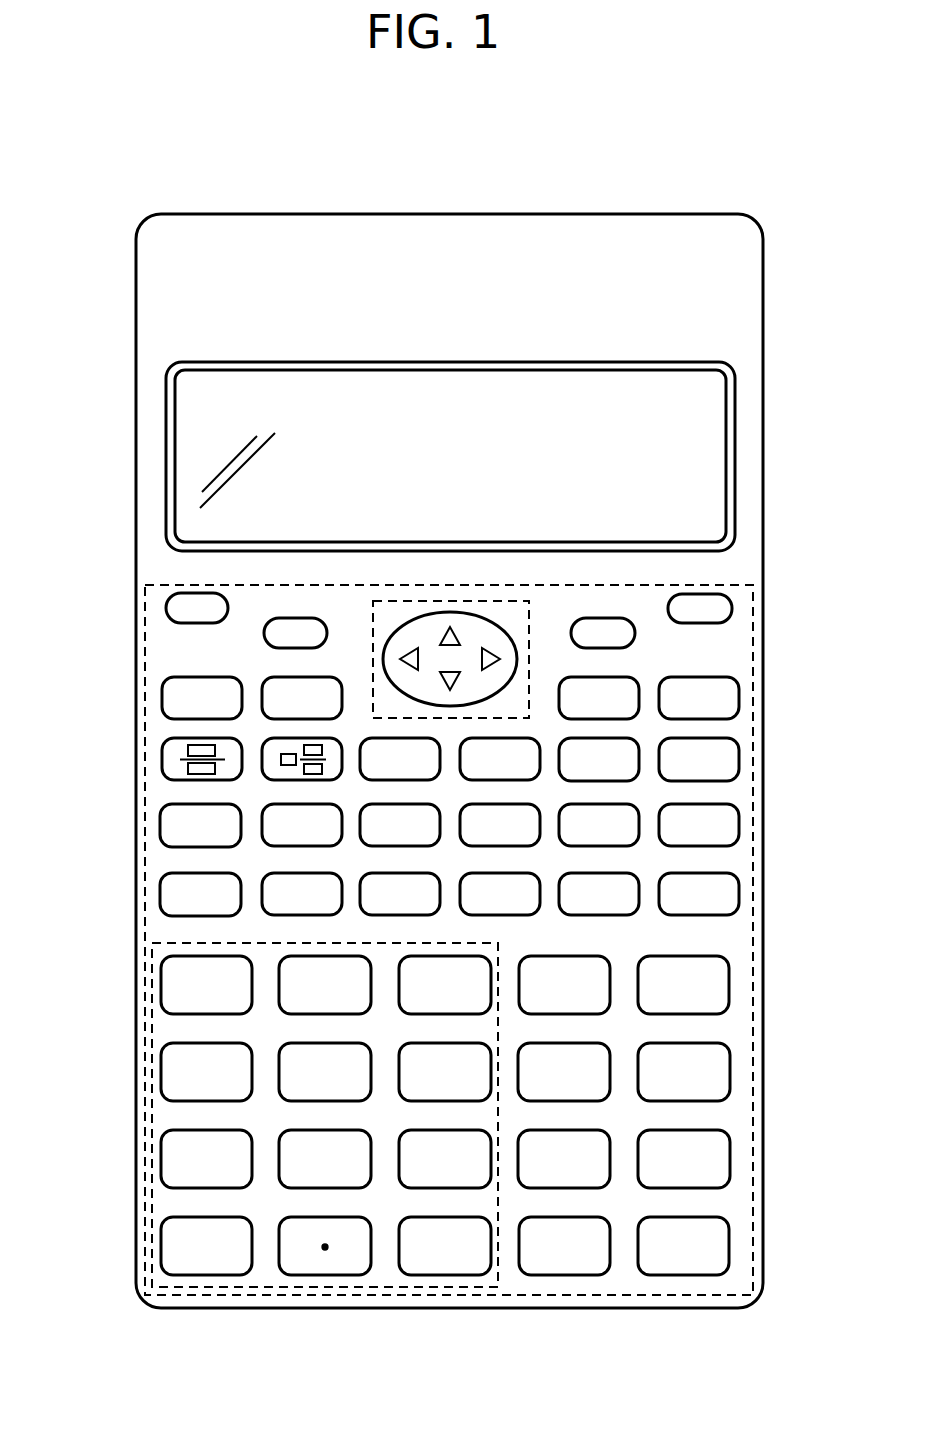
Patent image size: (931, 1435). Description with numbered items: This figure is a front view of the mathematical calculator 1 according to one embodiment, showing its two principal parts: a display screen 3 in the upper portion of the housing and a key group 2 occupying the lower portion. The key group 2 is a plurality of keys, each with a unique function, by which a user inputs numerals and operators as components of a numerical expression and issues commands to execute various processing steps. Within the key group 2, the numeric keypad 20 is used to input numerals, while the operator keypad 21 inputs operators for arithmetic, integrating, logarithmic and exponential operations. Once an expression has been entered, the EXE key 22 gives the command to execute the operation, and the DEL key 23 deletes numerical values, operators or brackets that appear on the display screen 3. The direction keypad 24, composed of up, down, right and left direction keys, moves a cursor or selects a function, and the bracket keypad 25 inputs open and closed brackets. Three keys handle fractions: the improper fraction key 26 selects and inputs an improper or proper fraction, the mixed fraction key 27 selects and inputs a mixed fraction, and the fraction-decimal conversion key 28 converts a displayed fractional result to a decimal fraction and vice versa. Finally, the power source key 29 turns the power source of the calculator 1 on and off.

The mathematical calculator 1 is at (69, 190).
The key group 2 is at (165, 585).
The display screen 3 is at (735, 448).
The numeric keypad 20 is at (180, 942).
The operator keypad 21 is at (366, 742).
The EXE key 22 is at (730, 1250).
The DEL key 23 is at (600, 955).
The direction keypad 24 is at (529, 615).
The bracket keypad 25 is at (600, 738).
The improper fraction key 26 is at (162, 760).
The mixed fraction key 27 is at (268, 780).
The fraction-decimal conversion key 28 is at (739, 895).
The power source key 29 is at (732, 610).